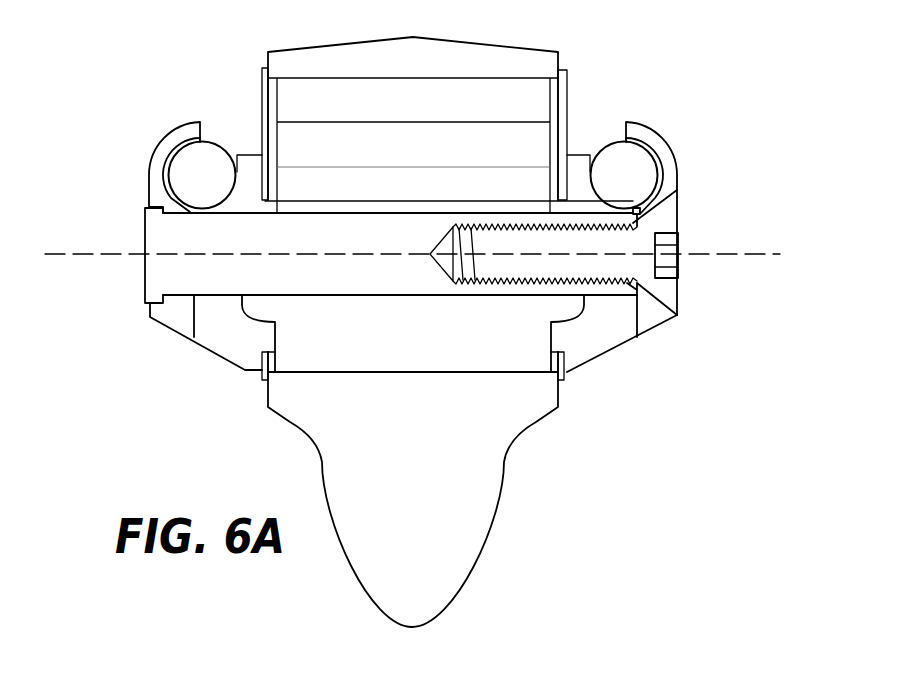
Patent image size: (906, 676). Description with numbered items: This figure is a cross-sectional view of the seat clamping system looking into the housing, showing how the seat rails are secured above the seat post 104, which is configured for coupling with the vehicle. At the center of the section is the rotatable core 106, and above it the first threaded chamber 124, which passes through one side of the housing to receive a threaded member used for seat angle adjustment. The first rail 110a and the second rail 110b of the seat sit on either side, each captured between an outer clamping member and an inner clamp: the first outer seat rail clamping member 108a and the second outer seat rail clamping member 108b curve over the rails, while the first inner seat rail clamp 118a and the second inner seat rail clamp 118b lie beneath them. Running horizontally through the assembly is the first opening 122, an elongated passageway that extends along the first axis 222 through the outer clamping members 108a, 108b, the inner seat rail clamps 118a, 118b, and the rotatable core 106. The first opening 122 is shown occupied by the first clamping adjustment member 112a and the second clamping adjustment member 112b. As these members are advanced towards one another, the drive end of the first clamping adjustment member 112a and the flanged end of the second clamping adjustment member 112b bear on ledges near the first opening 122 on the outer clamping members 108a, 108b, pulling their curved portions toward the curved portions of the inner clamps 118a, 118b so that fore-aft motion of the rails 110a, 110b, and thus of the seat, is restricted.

The seat post 104 is at (450, 520).
The rotatable core 106 is at (497, 360).
The first outer seat rail clamping member 108a is at (667, 180).
The second outer seat rail clamping member 108b is at (160, 192).
The first rail 110a is at (615, 170).
The second rail 110b is at (205, 178).
The first clamping adjustment member 112a is at (665, 215).
The second clamping adjustment member 112b is at (163, 240).
The first inner seat rail clamp 118a is at (595, 333).
The second inner seat rail clamp 118b is at (232, 335).
The first opening 122 is at (145, 274).
The first threaded chamber 124 is at (502, 105).
The first axis 222 is at (687, 255).